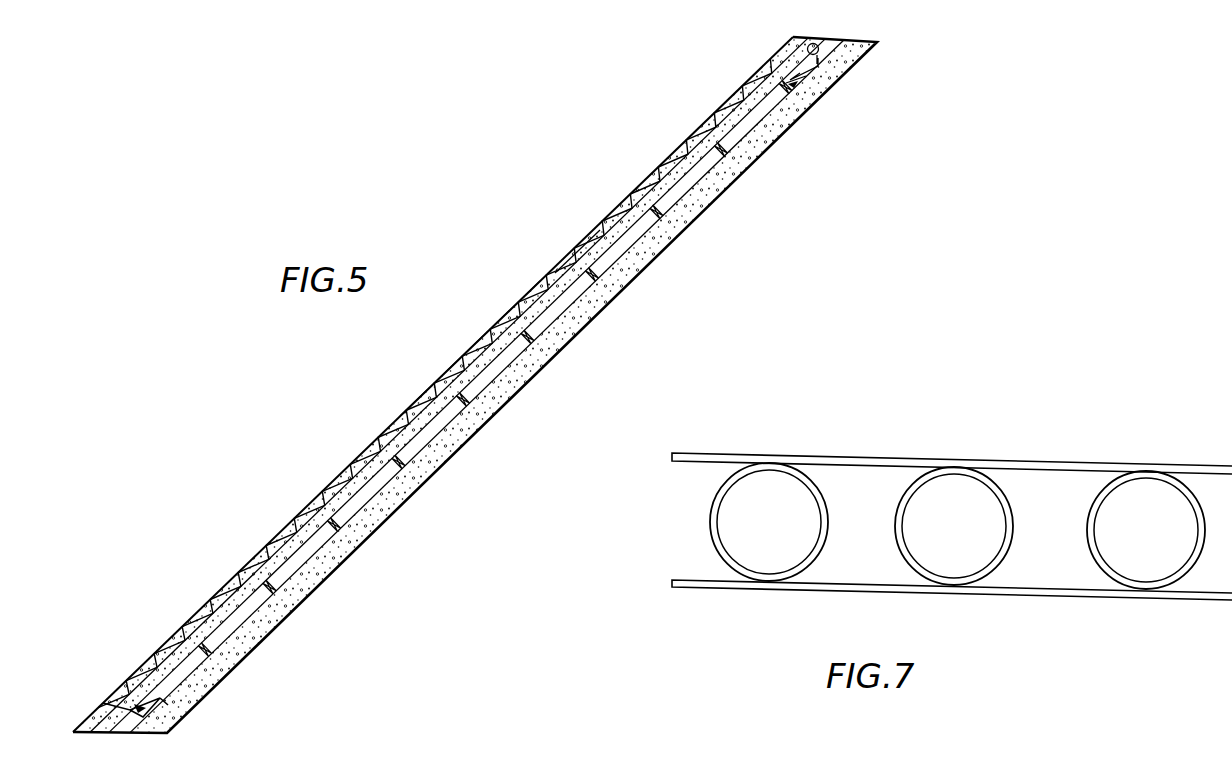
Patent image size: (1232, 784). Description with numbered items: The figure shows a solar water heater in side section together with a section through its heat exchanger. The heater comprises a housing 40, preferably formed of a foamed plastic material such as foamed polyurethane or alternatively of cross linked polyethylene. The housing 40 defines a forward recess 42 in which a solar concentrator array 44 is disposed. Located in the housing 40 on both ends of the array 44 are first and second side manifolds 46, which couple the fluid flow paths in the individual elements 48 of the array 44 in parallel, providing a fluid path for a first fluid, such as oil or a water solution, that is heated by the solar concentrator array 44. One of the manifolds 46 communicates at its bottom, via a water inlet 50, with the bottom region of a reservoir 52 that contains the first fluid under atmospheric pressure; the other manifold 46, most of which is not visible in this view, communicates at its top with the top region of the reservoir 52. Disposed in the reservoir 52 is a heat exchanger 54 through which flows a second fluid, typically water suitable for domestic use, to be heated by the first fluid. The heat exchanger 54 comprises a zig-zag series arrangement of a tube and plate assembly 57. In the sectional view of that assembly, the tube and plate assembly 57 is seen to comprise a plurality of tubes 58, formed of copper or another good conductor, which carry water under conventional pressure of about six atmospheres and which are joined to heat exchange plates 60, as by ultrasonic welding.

In FIG. 5, the housing 40 is at (876, 42).
In FIG. 5, the forward recess 42 is at (702, 120).
In FIG. 5, the solar concentrator array 44 is at (627, 196).
In FIG. 5, the side manifolds 46 is at (497, 318).
In FIG. 5, the individual elements 48 is at (586, 236).
In FIG. 5, the water inlet 50 is at (160, 704).
In FIG. 5, the reservoir 52 is at (692, 181).
In FIG. 5, the heat exchanger 54 is at (663, 218).
In FIG. 7, the tube and plate assembly 57 is at (952, 523).
In FIG. 7, the tubes 58 is at (897, 514).
In FIG. 7, the heat exchange plates 60 is at (1046, 457).